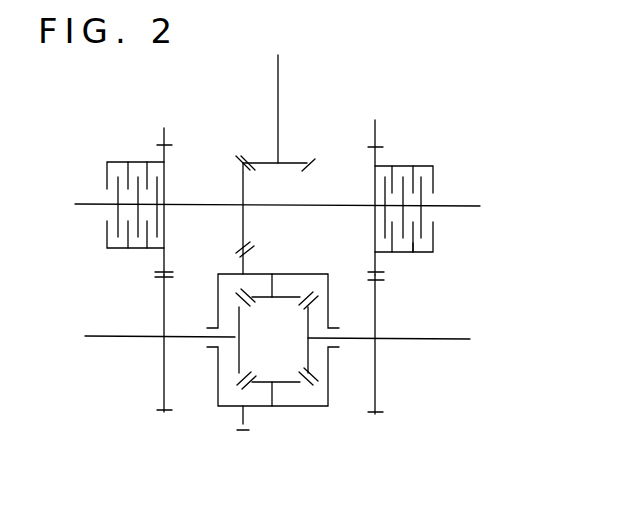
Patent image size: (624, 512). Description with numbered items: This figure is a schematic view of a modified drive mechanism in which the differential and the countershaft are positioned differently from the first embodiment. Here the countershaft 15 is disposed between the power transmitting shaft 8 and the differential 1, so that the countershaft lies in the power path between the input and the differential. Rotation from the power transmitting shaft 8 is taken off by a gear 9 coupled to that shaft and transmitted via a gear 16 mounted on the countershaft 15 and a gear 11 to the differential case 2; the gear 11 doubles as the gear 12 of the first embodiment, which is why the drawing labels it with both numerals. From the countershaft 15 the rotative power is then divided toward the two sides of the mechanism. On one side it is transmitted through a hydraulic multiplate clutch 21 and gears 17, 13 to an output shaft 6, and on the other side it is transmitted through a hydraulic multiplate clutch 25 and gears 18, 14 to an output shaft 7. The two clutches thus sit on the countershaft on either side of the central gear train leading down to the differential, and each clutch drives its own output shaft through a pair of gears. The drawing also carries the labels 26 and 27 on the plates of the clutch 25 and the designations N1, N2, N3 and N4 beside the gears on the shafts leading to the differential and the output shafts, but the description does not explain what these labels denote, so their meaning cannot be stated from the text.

The differential 1 is at (314, 418).
The differential case 2 is at (293, 274).
The output shaft 6 is at (104, 339).
The output shaft 7 is at (447, 338).
The power transmitting shaft 8 is at (278, 88).
The gear 9 is at (296, 162).
The gear 11 is at (243, 424).
The gear 12 is at (261, 450).
The gear 13 is at (164, 413).
The gear 14 is at (375, 418).
The countershaft 15 is at (336, 205).
The gear 16 is at (243, 183).
The gear 17 is at (164, 128).
The gear 18 is at (375, 121).
The hydraulic multiplate clutch 21 is at (101, 161).
The hydraulic multiplate clutch 25 is at (431, 174).
The clutch inner plate 26 is at (421, 190).
The clutch outer plate 27 is at (413, 245).
The gear N1 is at (231, 438).
The gear N2 is at (236, 155).
The gear N3 is at (269, 146).
The gear N4 is at (267, 415).